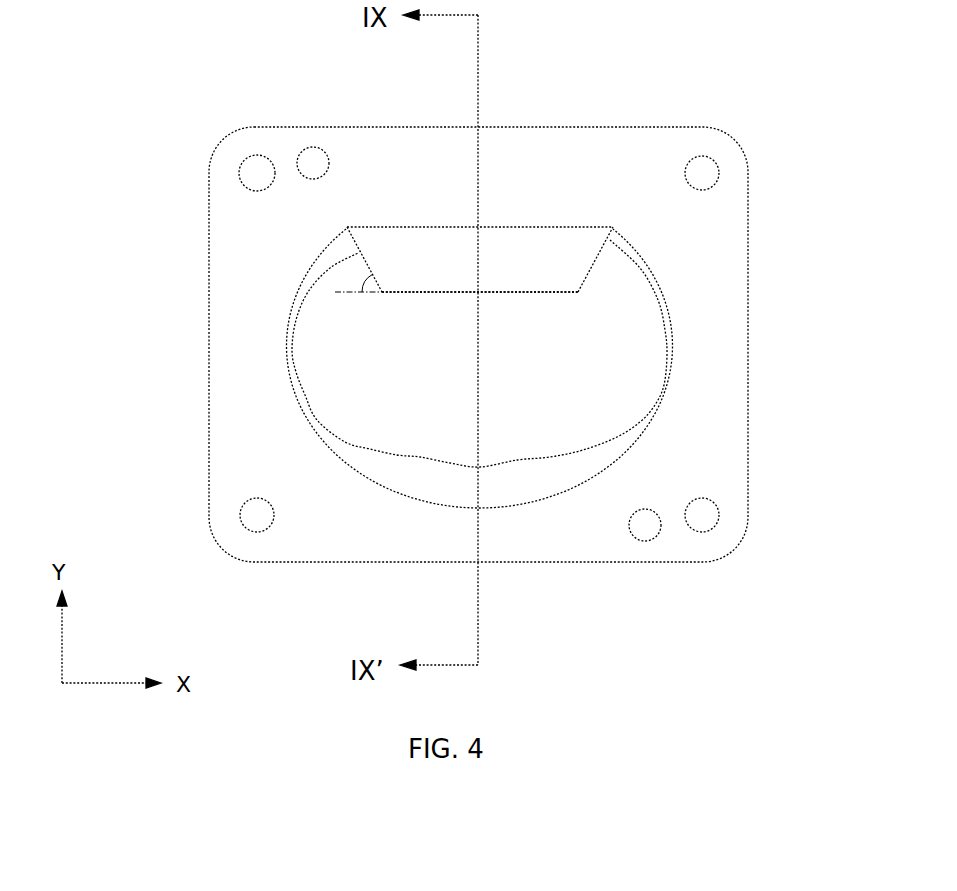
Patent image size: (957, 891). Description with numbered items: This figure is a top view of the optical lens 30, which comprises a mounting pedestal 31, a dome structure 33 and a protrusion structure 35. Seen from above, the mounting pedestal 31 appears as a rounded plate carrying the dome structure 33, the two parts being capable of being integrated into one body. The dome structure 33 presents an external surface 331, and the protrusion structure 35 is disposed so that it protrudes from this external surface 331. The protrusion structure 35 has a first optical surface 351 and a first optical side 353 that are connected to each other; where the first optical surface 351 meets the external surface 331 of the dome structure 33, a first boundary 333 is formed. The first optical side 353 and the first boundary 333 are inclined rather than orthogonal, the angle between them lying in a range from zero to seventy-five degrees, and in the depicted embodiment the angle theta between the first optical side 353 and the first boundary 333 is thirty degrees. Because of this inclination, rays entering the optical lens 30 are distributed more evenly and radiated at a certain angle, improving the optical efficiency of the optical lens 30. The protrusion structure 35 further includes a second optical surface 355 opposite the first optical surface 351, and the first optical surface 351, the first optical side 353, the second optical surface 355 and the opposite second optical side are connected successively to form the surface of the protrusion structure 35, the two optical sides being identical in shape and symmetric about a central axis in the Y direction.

The optical lens 30 is at (723, 660).
The mounting pedestal 31 is at (750, 467).
The dome structure 33 is at (643, 418).
The external surface 331 is at (630, 335).
The first boundary 333 is at (437, 293).
The protrusion structure 35 is at (572, 174).
The first optical surface 351 is at (518, 292).
The first optical side 353 is at (358, 253).
The second optical surface 355 is at (558, 253).